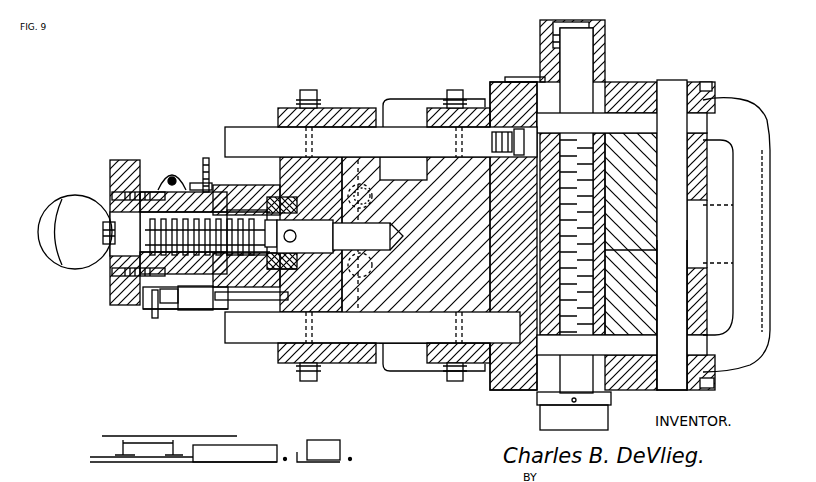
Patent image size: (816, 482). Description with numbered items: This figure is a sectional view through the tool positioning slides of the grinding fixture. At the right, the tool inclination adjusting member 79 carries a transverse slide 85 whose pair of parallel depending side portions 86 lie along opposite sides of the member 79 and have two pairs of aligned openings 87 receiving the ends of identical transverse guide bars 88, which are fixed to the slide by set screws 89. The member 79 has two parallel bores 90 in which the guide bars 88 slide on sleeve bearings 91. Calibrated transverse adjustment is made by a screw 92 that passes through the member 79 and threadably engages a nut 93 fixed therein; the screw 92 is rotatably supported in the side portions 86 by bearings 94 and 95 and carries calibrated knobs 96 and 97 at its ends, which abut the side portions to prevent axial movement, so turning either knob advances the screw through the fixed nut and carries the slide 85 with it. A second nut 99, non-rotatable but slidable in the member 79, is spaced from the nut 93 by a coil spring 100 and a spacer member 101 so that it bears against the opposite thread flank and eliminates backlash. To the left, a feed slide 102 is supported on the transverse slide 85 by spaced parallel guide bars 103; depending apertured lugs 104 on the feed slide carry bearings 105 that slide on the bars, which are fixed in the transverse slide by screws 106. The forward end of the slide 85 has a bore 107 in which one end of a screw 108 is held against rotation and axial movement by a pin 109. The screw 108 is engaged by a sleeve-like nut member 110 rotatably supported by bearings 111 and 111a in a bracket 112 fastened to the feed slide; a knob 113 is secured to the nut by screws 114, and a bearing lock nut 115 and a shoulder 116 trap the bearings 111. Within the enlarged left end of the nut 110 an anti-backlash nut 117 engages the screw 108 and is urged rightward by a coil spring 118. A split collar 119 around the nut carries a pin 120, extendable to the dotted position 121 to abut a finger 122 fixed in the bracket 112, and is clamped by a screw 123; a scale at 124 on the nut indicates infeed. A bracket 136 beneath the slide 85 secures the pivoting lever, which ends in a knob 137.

The tool inclination adjusting member 79 is at (632, 193).
The transverse slide 85 is at (515, 221).
The depending side portions 86 is at (628, 84).
The aligned openings 87 is at (680, 82).
The transverse guide bars 88 is at (518, 78).
The set screws 89 is at (698, 386).
The parallel bores 90 is at (687, 246).
The sleeve bearings 91 is at (652, 175).
The screw 92 is at (635, 246).
The nut 93 is at (541, 341).
The bearing 94 is at (513, 107).
The bearing 95 is at (597, 349).
The calibrated knob 96 is at (603, 30).
The calibrated knob 97 is at (585, 428).
The second nut 99 is at (590, 136).
The coil spring 100 is at (599, 222).
The spacer member 101 is at (611, 263).
The feed slide 102 is at (317, 169).
The guide bars 103 is at (432, 148).
The depending apertured lugs 104 is at (322, 108).
The bearings 105 is at (425, 98).
The screws 106 is at (492, 147).
The bore 107 is at (402, 229).
The screw 108 is at (325, 244).
The pin 109 is at (373, 208).
The sleeve-like nut member 110 is at (212, 188).
The bearings 111 is at (262, 208).
The bearing 111a is at (268, 300).
The bracket 112 is at (239, 305).
The knob 113 is at (127, 160).
The screws 114 is at (112, 192).
The bearing lock nut 115 is at (292, 276).
The shoulder 116 is at (243, 196).
The anti-backlash nut 117 is at (188, 312).
The coil spring 118 is at (112, 281).
The collar 119 is at (147, 190).
The pin 120 is at (166, 309).
The extended pin position 121 is at (180, 340).
The finger 122 is at (217, 305).
The screw 123 is at (172, 176).
The scale 124 is at (206, 182).
The bracket 136 is at (372, 327).
The knob 137 is at (88, 228).